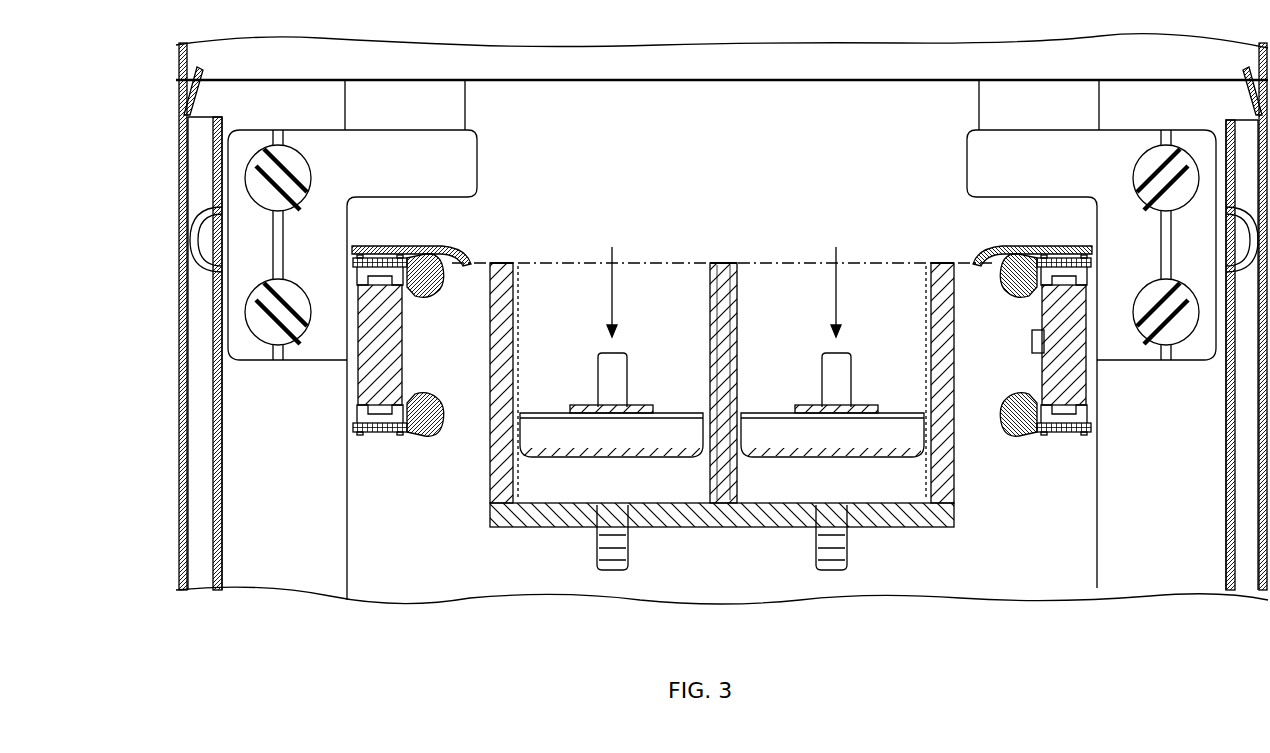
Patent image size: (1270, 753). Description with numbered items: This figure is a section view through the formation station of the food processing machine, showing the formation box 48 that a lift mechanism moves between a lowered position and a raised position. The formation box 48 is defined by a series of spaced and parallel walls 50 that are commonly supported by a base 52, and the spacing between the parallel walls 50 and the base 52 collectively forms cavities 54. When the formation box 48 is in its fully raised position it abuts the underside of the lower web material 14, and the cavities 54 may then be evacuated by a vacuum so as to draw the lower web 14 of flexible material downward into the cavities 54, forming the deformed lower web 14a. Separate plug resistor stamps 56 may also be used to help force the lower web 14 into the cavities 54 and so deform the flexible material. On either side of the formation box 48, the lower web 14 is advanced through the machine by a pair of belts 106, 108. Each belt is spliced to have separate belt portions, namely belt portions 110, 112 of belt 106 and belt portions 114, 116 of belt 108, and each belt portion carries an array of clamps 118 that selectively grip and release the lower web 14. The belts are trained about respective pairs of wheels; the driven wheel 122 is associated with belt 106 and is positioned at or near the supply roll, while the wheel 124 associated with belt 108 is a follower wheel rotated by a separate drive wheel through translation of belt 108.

The lower web material 14 is at (795, 270).
The deformed lower web 14a is at (628, 457).
The formation box 48 is at (473, 514).
The parallel walls 50 is at (513, 291).
The base 52 is at (720, 530).
The cavities 54 is at (538, 480).
The plug resistor stamps 56 is at (660, 427).
The belt 106 is at (378, 442).
The belt 108 is at (1056, 262).
The belt portion 110 is at (372, 435).
The belt portion 112 is at (398, 434).
The belt portion 114 is at (1058, 434).
The belt portion 116 is at (1100, 434).
The clamps 118 is at (448, 400).
The driven wheel 122 is at (377, 374).
The follower wheel 124 is at (1083, 380).